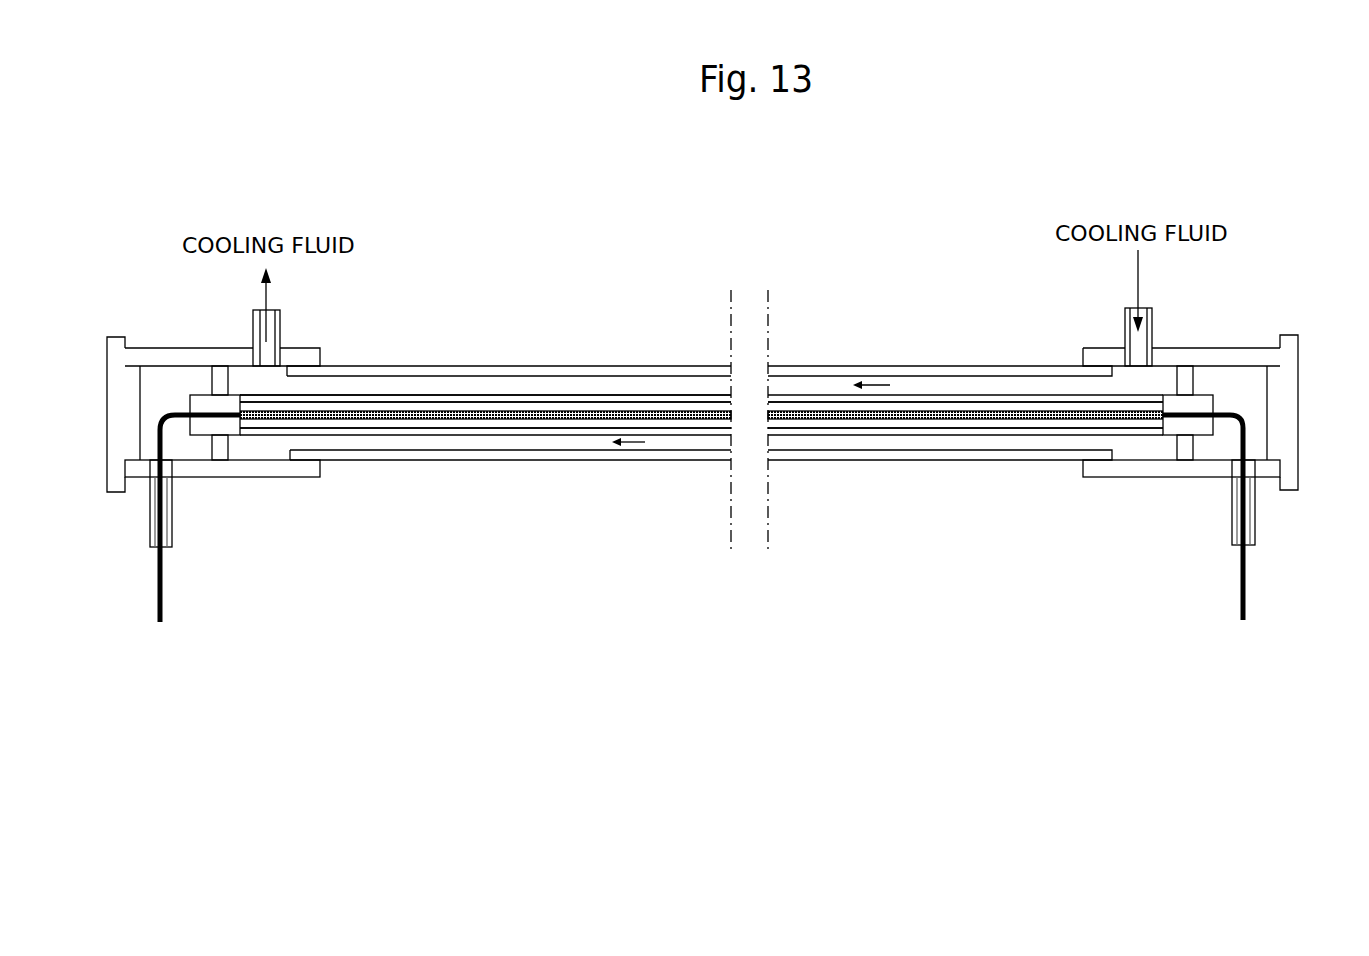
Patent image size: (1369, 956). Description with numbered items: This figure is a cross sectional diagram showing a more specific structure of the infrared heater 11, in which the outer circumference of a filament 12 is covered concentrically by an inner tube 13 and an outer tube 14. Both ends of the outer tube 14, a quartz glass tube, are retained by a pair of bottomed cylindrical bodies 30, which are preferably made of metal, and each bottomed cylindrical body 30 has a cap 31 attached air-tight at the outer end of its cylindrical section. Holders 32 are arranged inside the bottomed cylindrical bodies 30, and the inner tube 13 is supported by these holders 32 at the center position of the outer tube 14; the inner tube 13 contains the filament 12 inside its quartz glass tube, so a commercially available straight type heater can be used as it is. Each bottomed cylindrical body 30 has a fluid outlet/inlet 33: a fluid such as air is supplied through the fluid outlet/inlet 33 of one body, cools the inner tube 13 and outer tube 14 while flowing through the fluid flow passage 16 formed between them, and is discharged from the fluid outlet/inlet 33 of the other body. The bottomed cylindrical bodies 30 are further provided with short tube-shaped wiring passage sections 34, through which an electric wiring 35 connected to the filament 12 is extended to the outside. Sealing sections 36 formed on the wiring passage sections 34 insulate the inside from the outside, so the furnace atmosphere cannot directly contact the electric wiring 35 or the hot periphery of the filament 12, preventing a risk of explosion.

The infrared heater 11 is at (523, 342).
The filament 12 is at (543, 410).
The inner tube 13 is at (580, 397).
The outer tube 14 is at (648, 367).
The fluid flow passage 16 is at (427, 385).
The bottomed cylindrical body 30 is at (190, 350).
The cap 31 is at (112, 412).
The holder 32 is at (203, 430).
The fluid outlet/inlet 33 is at (283, 323).
The wiring passage section 34 is at (148, 518).
The electric wiring 35 is at (163, 597).
The sealing section 36 is at (155, 495).